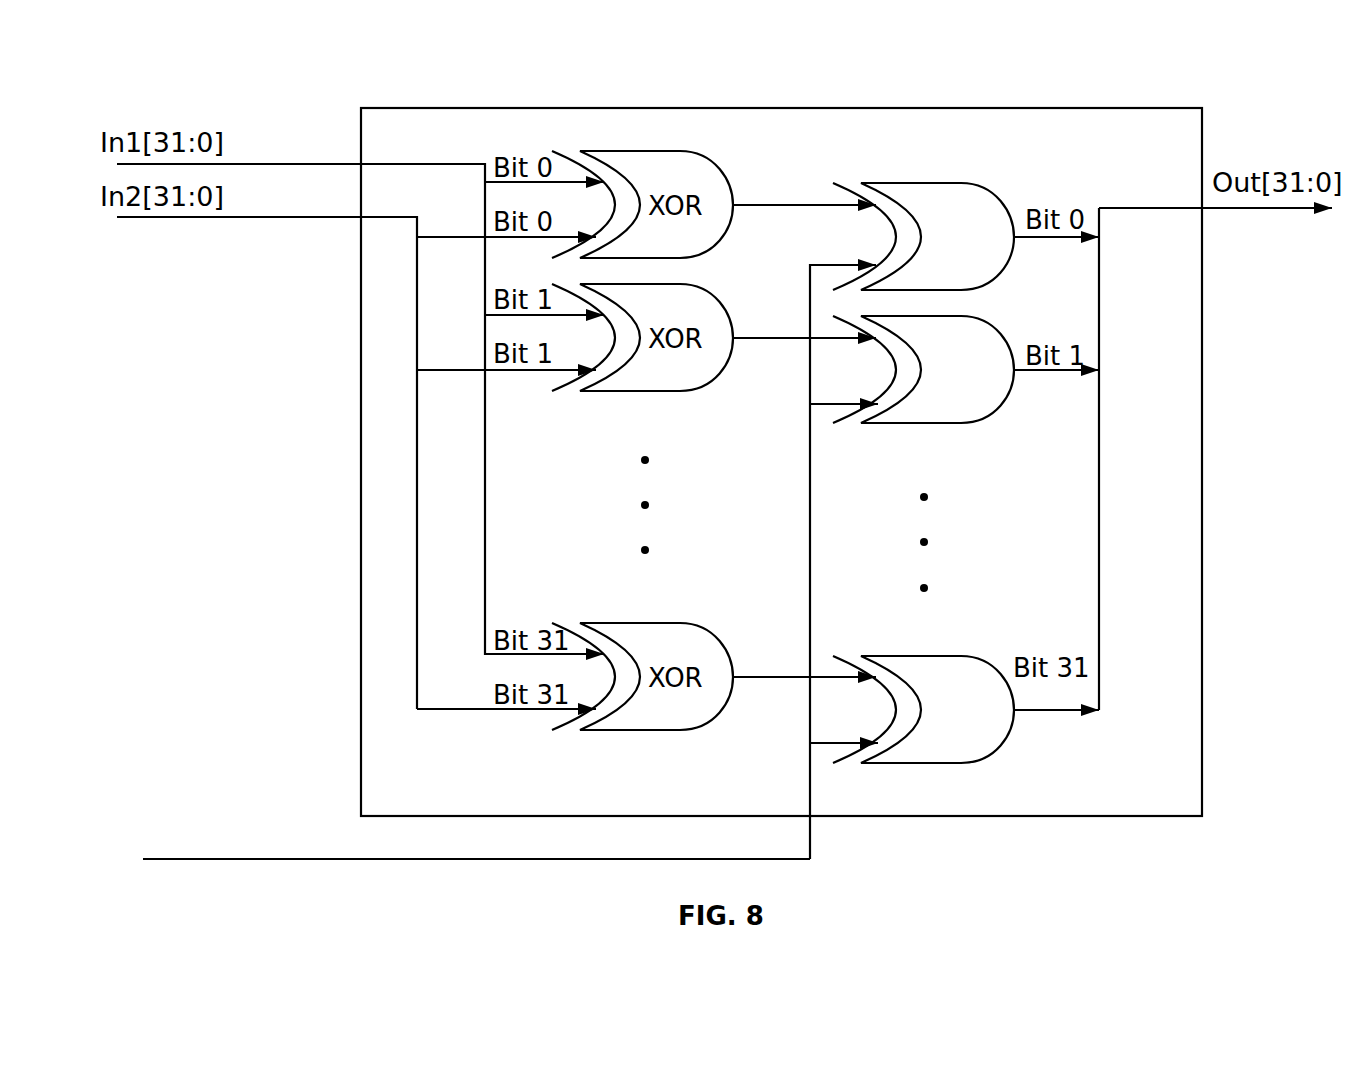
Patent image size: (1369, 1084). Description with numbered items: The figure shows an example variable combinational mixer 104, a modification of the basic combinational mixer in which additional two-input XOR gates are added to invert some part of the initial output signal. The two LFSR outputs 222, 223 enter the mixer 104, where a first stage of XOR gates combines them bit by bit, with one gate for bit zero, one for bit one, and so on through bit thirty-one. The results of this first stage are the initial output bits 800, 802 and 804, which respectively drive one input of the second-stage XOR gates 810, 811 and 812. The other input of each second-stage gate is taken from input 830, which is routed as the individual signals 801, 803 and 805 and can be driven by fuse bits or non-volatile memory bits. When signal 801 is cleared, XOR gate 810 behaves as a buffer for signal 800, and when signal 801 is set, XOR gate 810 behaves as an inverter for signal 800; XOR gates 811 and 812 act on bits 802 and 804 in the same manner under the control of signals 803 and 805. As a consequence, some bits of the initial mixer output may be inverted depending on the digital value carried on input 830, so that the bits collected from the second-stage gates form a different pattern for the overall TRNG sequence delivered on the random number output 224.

The combinational mixer 104 is at (428, 108).
The LFSR output 222 is at (329, 163).
The LFSR output 223 is at (329, 216).
The random number output 224 is at (1250, 210).
The initial output bit 800 is at (816, 207).
The input signal 801 is at (846, 263).
The initial output bit 802 is at (788, 337).
The input signal 803 is at (832, 408).
The initial output bit 804 is at (788, 676).
The input signal 805 is at (835, 746).
The XOR gate 810 is at (935, 185).
The XOR gate 811 is at (952, 425).
The XOR gate 812 is at (960, 764).
The input 830 is at (346, 858).